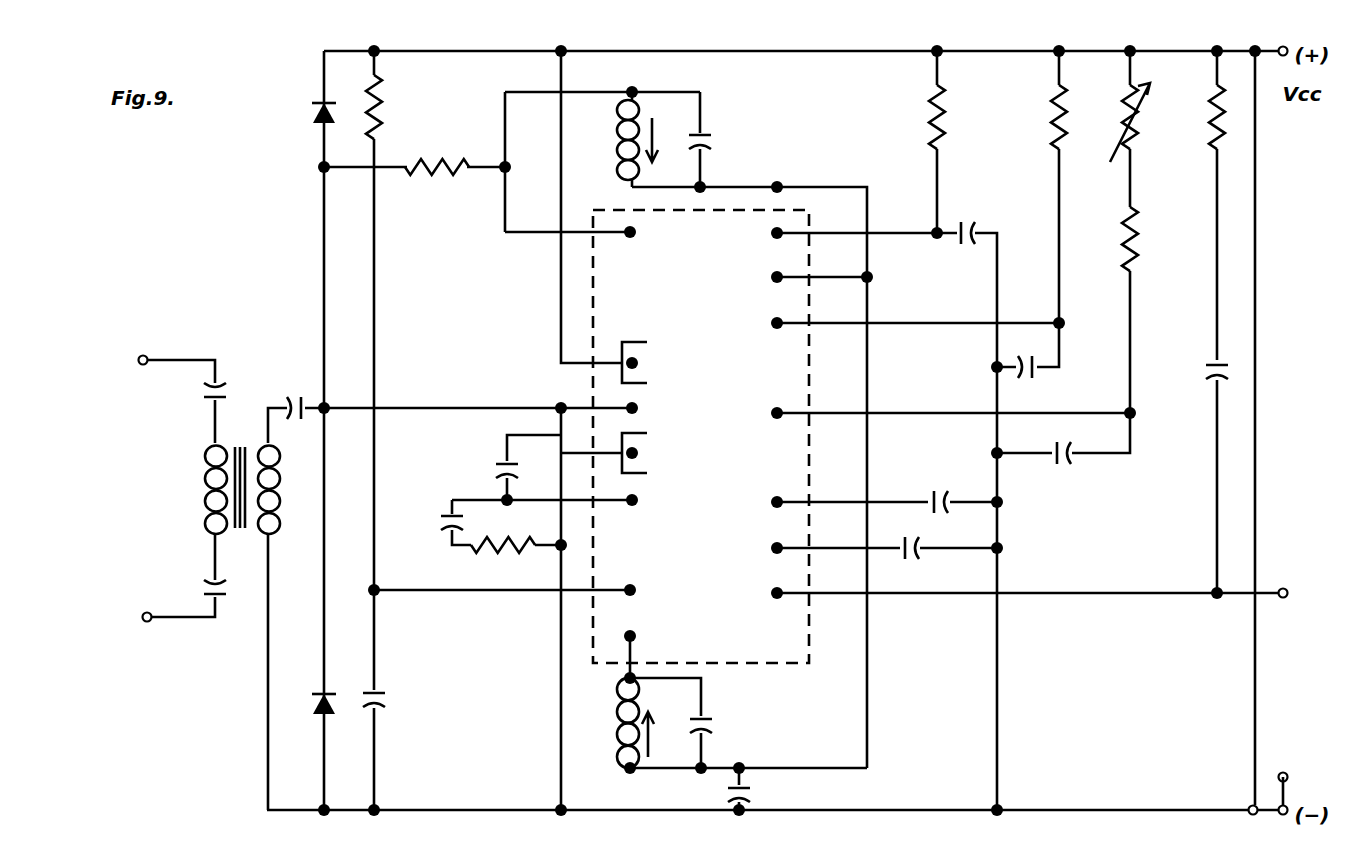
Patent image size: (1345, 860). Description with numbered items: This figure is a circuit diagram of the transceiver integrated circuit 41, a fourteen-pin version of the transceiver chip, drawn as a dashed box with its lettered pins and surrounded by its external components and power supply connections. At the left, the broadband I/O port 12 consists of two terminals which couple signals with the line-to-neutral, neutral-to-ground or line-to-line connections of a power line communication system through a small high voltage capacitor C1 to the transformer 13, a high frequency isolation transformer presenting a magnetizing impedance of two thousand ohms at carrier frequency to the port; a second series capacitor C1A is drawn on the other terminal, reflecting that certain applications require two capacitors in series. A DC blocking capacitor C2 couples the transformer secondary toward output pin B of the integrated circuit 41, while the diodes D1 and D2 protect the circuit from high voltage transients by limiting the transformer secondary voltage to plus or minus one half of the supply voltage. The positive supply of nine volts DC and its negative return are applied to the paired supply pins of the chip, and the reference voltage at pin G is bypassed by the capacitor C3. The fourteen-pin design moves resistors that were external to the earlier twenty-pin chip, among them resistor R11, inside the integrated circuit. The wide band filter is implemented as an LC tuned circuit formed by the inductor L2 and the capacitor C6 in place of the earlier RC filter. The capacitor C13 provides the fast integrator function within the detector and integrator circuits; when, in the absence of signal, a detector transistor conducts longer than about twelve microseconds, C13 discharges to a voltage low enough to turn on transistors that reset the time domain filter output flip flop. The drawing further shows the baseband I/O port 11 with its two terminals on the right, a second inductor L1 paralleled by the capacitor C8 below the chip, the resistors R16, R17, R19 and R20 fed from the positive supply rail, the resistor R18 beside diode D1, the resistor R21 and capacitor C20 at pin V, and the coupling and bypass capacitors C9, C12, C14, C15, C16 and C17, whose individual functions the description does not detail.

The baseband I/O port 11 is at (1275, 736).
The broadband I/O port 12 is at (117, 549).
The transformer 13 is at (242, 504).
The transceiver integrated circuit 41 is at (758, 442).
The diode D1 is at (305, 117).
The diode D2 is at (306, 707).
The resistor R11 is at (437, 183).
The resistor R16 is at (903, 117).
The variable resistor R17 is at (1105, 177).
The resistor R18 is at (401, 107).
The resistor R19 is at (1023, 117).
The resistor R20 is at (1184, 117).
The resistor R21 is at (503, 561).
The inductor L1 is at (615, 723).
The inductor L2 is at (618, 140).
The high voltage capacitor C1 is at (197, 390).
The capacitor C1A is at (182, 578).
The DC blocking capacitor C2 is at (290, 392).
The capacitor C3 is at (719, 793).
The capacitor C6 is at (715, 140).
The capacitor C8 is at (715, 724).
The capacitor C9 is at (976, 223).
The capacitor C12 is at (1081, 467).
The capacitor C13 is at (945, 486).
The capacitor C14 is at (930, 560).
The capacitor C15 is at (390, 706).
The capacitor C16 is at (1039, 379).
The capacitor C17 is at (869, 412).
The capacitor C20 is at (423, 531).